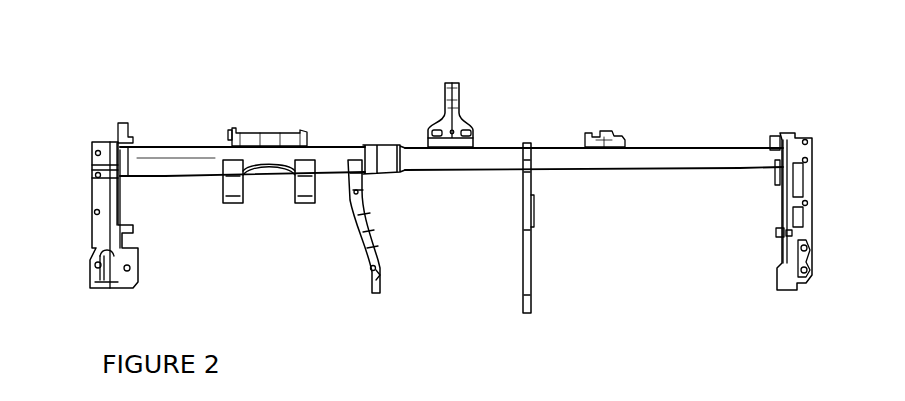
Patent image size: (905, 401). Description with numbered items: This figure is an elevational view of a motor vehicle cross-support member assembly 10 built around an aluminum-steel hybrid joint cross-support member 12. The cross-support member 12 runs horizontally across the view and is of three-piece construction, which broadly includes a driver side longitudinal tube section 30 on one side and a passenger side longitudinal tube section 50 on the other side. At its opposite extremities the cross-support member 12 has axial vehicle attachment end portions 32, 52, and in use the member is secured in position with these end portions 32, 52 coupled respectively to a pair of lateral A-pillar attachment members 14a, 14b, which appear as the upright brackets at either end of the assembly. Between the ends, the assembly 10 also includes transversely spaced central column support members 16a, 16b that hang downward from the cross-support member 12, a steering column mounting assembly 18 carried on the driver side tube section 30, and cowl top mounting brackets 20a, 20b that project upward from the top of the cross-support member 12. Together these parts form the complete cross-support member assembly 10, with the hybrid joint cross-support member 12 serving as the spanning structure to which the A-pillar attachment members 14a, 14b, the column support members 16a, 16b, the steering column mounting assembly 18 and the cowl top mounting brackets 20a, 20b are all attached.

The cross-support member assembly 10 is at (551, 76).
The aluminum-steel hybrid joint cross-support member 12 is at (463, 174).
The lateral A-pillar attachment member 14a is at (110, 230).
The lateral A-pillar attachment member 14b is at (808, 282).
The central column support member 16a is at (372, 274).
The central column support member 16b is at (532, 298).
The steering column mounting assembly 18 is at (272, 128).
The cowl top mounting bracket 20a is at (451, 83).
The cowl top mounting bracket 20b is at (617, 128).
The driver side longitudinal tube section 30 is at (178, 182).
The axial vehicle attachment end portion 32 is at (140, 130).
The passenger side longitudinal tube section 50 is at (706, 178).
The axial vehicle attachment end portion 52 is at (778, 152).